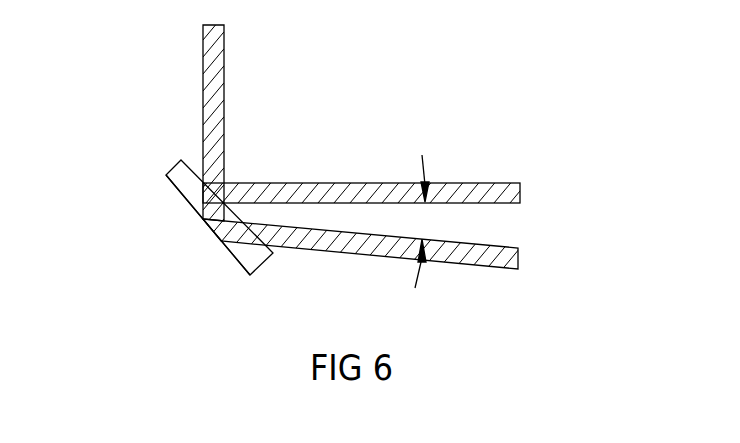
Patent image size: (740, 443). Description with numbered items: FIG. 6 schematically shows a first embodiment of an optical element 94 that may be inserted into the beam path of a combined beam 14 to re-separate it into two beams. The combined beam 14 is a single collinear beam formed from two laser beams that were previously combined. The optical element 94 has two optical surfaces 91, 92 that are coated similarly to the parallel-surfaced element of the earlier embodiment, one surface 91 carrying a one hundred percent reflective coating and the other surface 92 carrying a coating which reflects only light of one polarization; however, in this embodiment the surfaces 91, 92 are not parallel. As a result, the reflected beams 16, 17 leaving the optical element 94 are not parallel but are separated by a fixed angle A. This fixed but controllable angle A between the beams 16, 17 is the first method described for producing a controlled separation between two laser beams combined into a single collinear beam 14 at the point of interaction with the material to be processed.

The combined collinear beam 14 is at (214, 65).
The reflected beam 16 is at (473, 183).
The reflected beam 17 is at (513, 248).
The optical surface 91 is at (180, 190).
The optical surface 92 is at (190, 160).
The optical element 94 is at (165, 258).
The fixed angle A is at (417, 205).